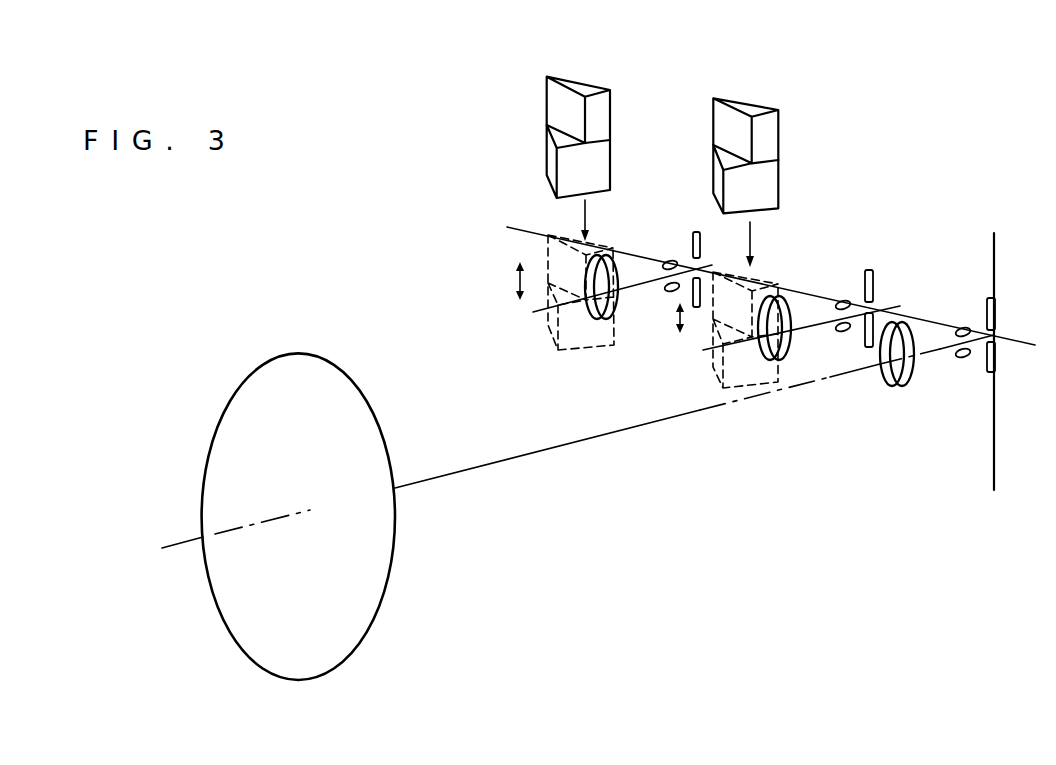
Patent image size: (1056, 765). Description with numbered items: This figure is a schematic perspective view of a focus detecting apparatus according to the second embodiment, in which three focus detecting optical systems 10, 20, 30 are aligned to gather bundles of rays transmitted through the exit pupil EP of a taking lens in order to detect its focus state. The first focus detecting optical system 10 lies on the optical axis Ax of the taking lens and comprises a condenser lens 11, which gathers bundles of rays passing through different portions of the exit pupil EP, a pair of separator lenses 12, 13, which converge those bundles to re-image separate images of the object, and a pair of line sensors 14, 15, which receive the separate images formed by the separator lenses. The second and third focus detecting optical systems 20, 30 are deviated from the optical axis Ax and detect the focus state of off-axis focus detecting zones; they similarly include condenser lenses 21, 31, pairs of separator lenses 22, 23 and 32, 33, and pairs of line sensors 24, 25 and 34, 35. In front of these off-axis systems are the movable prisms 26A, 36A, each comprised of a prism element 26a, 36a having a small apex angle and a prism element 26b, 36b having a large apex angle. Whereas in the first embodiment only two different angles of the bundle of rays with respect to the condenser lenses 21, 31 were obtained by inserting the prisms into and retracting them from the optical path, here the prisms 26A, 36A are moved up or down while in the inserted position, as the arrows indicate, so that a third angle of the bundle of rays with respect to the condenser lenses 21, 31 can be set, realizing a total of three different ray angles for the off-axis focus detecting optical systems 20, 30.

The first focus detecting optical system 10 is at (946, 402).
The condenser lens 11 is at (898, 390).
The separator lens 12 is at (963, 327).
The separator lens 13 is at (963, 358).
The line sensor 14 is at (996, 305).
The line sensor 15 is at (996, 352).
The second focus detecting optical system 20 is at (824, 339).
The condenser lens 21 is at (787, 302).
The separator lens 22 is at (843, 300).
The separator lens 23 is at (845, 333).
The line sensor 24 is at (872, 275).
The line sensor 25 is at (875, 322).
The movable prism 26A is at (792, 177).
The prism element 26a is at (779, 113).
The prism element 26b is at (779, 184).
The third focus detecting optical system 30 is at (636, 343).
The condenser lens 31 is at (608, 262).
The separator lens 32 is at (670, 260).
The separator lens 33 is at (668, 291).
The line sensor 34 is at (719, 239).
The line sensor 35 is at (696, 310).
The movable prism 36A is at (627, 159).
The prism element 36a is at (610, 97).
The prism element 36b is at (610, 176).
The exit pupil EP is at (372, 602).
The optical axis Ax is at (685, 428).